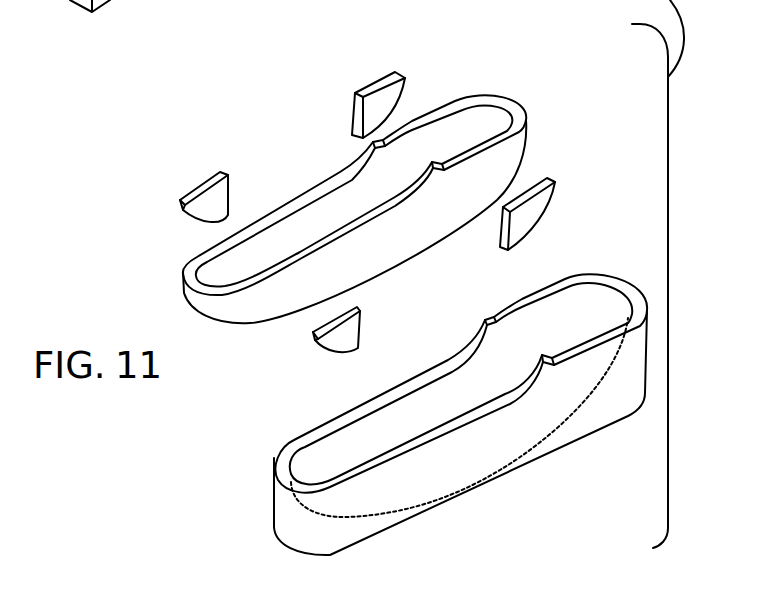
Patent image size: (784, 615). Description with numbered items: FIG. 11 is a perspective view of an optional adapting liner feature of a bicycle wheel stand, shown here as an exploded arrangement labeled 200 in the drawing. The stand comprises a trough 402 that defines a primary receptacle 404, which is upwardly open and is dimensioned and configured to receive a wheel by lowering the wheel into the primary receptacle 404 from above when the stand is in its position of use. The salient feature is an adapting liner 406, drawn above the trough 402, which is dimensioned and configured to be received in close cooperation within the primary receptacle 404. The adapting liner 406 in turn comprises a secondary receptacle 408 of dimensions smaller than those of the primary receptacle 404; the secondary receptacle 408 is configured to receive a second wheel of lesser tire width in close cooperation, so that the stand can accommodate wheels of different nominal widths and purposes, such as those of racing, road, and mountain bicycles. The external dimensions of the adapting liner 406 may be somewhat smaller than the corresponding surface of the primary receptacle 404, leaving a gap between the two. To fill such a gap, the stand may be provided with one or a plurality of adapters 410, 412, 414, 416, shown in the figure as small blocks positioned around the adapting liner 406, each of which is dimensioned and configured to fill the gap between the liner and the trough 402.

The door handle assembly 200 is at (247, 93).
The trough 402 is at (272, 502).
The primary receptacle 404 is at (311, 458).
The adapting liner 406 is at (475, 58).
The secondary receptacle 408 is at (337, 208).
The adapter 410 is at (347, 332).
The adapter 412 is at (530, 213).
The adapter 414 is at (390, 102).
The adapter 416 is at (203, 202).